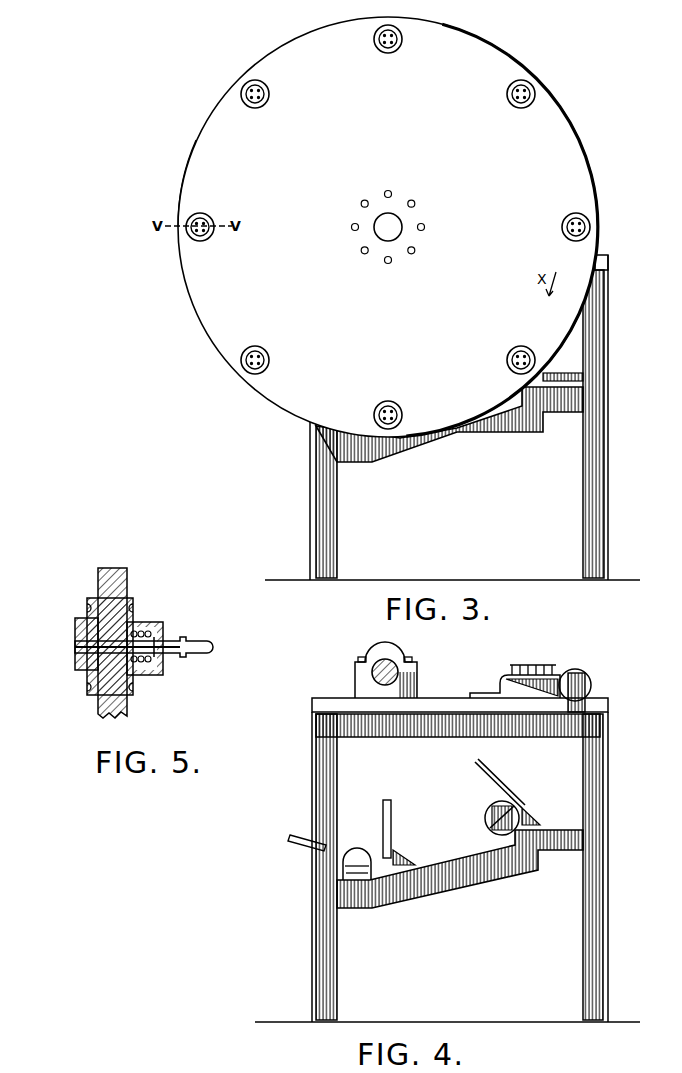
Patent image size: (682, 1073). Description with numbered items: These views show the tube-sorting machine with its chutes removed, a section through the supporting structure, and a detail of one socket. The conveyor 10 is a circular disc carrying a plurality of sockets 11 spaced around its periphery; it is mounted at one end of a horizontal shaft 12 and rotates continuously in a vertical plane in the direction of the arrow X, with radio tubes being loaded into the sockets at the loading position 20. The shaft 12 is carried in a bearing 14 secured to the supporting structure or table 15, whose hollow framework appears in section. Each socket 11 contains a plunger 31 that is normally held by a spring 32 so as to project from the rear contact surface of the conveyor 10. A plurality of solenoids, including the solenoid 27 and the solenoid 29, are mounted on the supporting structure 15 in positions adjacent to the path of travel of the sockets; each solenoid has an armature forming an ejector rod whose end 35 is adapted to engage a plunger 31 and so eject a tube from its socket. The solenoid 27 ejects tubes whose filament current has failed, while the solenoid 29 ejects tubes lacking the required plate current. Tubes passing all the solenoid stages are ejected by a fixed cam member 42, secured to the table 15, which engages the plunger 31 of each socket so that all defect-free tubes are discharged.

In FIG. 3, the conveyor 10 is at (581, 160).
In FIG. 5, the conveyor 10 is at (100, 711).
In FIG. 3, the sockets 11 is at (591, 222).
In FIG. 5, the sockets 11 is at (88, 672).
In FIG. 4, the horizontal shaft 12 is at (378, 681).
In FIG. 4, the bearing 14 is at (388, 660).
In FIG. 3, the supporting structure 15 is at (605, 265).
In FIG. 4, the supporting structure 15 is at (312, 720).
In FIG. 3, the loading position 20 is at (190, 181).
In FIG. 4, the solenoid 27 is at (591, 688).
In FIG. 4, the solenoid 29 is at (358, 850).
In FIG. 5, the plunger 31 is at (75, 648).
In FIG. 5, the spring 32 is at (150, 626).
In FIG. 4, the ejector rod end 35 is at (485, 817).
In FIG. 4, the fixed cam member 42 is at (290, 840).